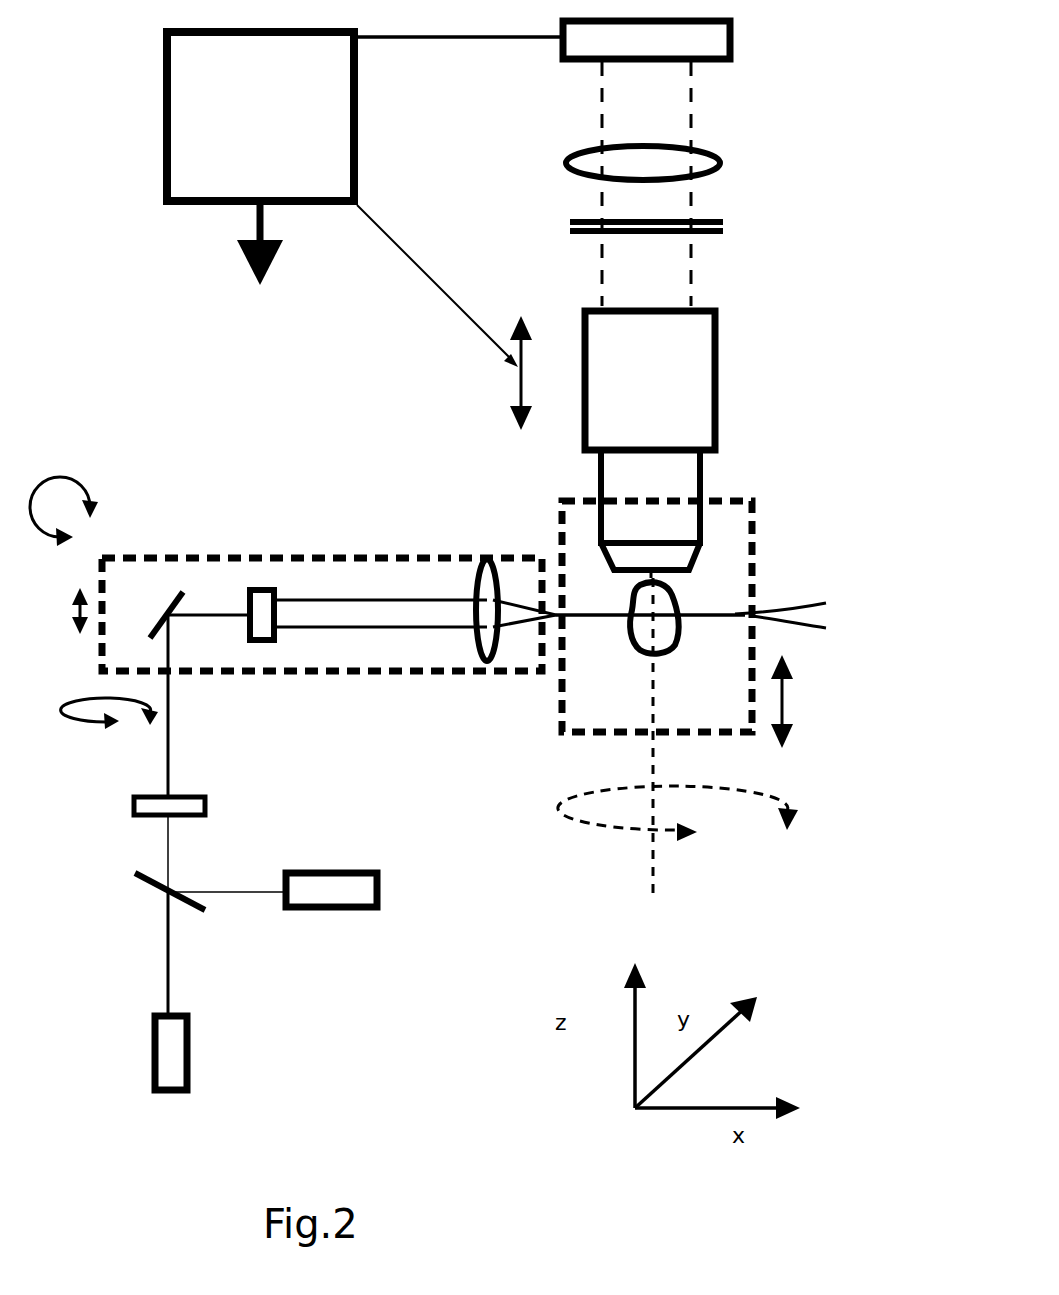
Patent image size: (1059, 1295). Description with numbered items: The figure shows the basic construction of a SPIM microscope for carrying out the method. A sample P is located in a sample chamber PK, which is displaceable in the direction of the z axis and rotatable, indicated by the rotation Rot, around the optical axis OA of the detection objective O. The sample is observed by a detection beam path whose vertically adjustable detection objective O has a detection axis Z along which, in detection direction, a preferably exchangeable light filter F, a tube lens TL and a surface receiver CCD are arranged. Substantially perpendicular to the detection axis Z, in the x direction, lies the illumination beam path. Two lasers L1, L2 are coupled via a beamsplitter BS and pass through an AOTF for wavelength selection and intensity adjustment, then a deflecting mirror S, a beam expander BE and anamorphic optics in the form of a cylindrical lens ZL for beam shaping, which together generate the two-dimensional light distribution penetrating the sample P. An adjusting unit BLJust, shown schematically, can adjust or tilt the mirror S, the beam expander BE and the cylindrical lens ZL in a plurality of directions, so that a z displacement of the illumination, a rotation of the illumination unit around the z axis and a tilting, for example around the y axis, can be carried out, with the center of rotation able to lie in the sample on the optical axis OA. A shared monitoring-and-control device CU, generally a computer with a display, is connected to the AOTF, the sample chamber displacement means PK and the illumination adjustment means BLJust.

The monitoring-and-control device CU is at (361, 223).
The surface receiver CCD is at (702, 158).
The tube lens TL is at (673, 167).
The light filter F is at (667, 220).
The detection objective O is at (677, 444).
The detection axis Z is at (672, 523).
The sample chamber PK is at (683, 607).
The sample P is at (661, 638).
The optical axis OA is at (682, 738).
The rotation Rot is at (705, 814).
The beam expander BE is at (322, 590).
The deflecting mirror S is at (106, 603).
The cylindrical lens ZL is at (484, 581).
The adjusting unit BLJust is at (372, 695).
The element AOTF is at (221, 806).
The beamsplitter BS is at (156, 902).
The laser L2 is at (331, 920).
The laser L1 is at (209, 1053).